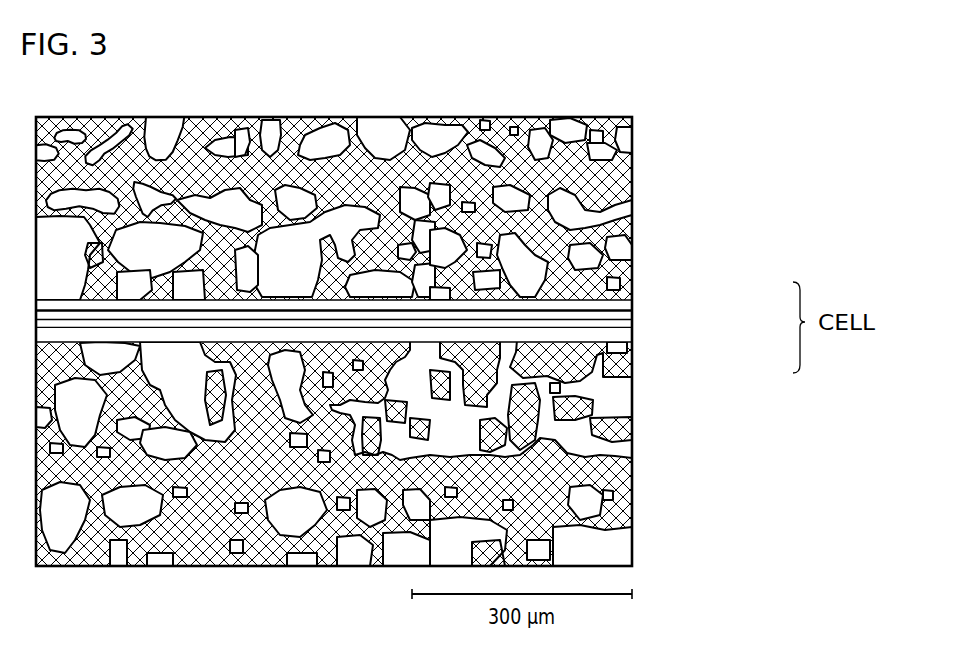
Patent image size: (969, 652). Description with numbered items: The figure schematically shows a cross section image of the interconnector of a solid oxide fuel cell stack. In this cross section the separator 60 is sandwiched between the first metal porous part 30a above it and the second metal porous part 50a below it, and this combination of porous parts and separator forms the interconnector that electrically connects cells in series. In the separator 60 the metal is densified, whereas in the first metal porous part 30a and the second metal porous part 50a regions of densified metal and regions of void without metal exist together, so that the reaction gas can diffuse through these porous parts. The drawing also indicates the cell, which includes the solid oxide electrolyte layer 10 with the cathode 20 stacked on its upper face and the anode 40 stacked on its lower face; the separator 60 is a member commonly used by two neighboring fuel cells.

The solid oxide electrolyte layer 10 is at (632, 323).
The cathode 20 is at (632, 305).
The anode 40 is at (632, 335).
The first metal porous part 30a is at (640, 195).
The second metal porous part 50a is at (640, 122).
The separator 60 is at (632, 181).